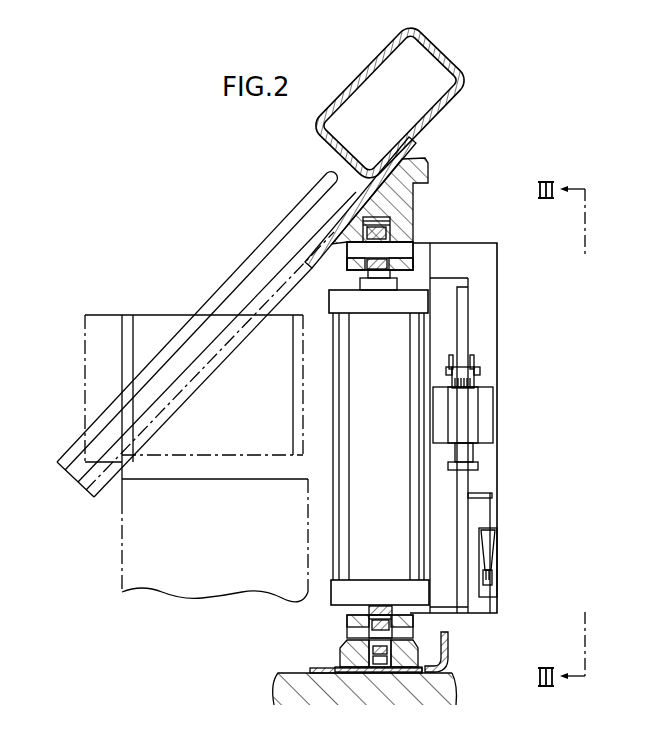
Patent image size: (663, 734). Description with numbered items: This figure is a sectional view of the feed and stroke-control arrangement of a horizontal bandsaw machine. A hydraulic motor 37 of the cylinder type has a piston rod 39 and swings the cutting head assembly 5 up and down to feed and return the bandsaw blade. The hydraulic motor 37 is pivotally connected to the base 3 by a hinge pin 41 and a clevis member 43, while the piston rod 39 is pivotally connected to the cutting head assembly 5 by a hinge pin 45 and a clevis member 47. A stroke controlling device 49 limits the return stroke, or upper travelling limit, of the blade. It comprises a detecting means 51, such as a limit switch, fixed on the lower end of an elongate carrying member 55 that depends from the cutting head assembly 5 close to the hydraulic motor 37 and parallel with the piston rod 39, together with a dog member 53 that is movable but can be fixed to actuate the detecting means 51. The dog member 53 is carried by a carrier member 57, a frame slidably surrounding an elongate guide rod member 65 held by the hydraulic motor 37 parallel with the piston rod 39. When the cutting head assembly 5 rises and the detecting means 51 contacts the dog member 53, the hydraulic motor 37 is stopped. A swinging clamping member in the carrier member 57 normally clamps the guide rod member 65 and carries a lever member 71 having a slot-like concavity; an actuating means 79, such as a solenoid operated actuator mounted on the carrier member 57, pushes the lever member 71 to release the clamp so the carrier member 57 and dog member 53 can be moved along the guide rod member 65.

The base 3 is at (446, 679).
The cutting head assembly 5 is at (472, 52).
The hydraulic motor 37 is at (360, 522).
The piston rod 39 is at (386, 291).
The hinge pin 41 is at (352, 632).
The clevis member 43 is at (352, 652).
The hinge pin 45 is at (403, 252).
The clevis member 47 is at (410, 203).
The stroke controlling device 49 is at (499, 386).
The detecting means 51 is at (492, 544).
The dog member 53 is at (482, 500).
The carrying member 55 is at (488, 262).
The carrier member 57 is at (488, 383).
The guide rod member 65 is at (463, 307).
The lever member 71 is at (452, 356).
The actuating means 79 is at (470, 414).